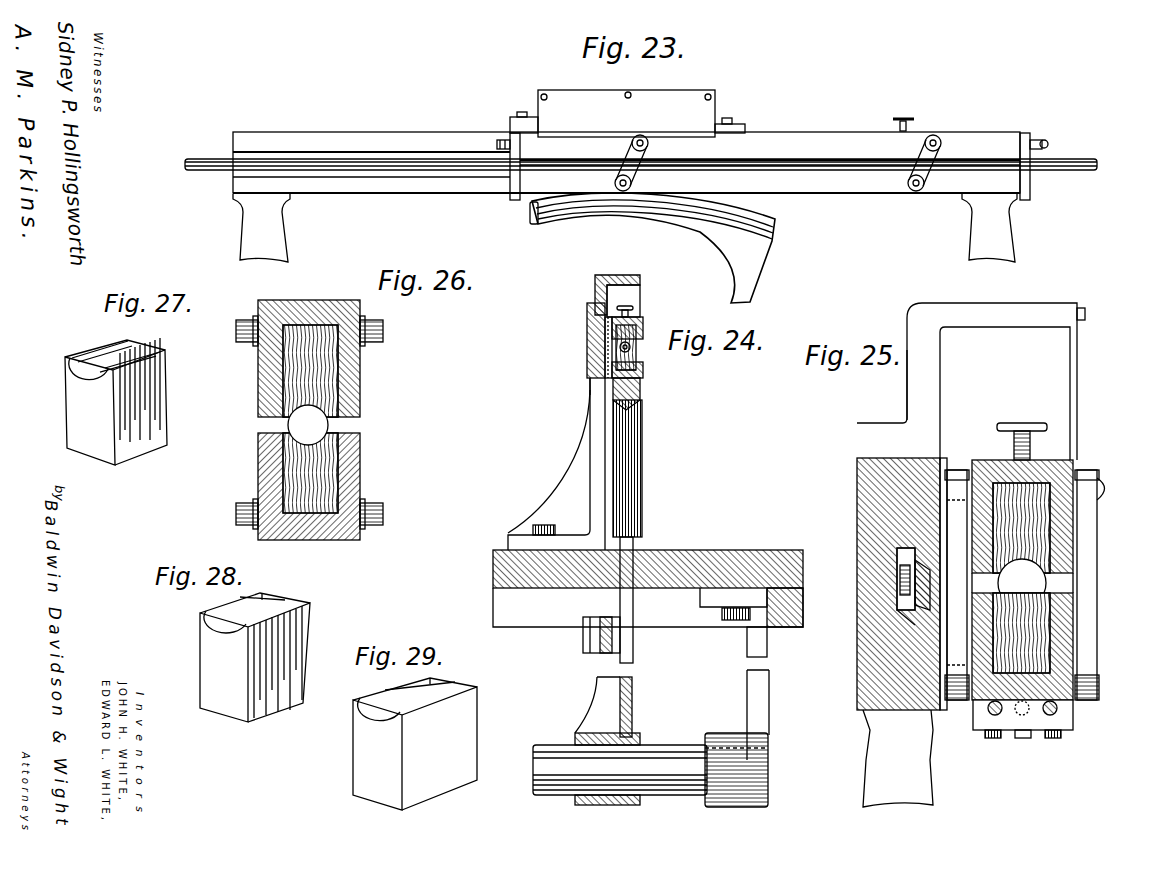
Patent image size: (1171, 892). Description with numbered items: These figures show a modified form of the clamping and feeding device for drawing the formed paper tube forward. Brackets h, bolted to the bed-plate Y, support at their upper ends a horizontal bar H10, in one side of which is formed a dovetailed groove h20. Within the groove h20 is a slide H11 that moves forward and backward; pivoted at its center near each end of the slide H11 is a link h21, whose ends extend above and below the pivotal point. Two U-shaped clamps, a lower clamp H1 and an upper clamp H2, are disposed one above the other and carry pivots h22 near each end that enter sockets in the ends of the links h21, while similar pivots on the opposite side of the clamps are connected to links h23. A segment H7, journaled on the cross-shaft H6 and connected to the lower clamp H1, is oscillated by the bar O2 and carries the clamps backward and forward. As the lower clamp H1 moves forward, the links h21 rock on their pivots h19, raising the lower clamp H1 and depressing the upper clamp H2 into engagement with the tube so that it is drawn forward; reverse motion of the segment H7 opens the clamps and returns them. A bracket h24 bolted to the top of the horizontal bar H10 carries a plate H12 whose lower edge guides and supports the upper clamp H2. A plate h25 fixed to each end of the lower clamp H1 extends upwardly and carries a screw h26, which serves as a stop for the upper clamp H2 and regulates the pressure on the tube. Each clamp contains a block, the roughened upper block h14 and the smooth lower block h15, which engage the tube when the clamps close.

In FIG. 23, the brackets h is at (625, 228).
In FIG. 24, the brackets h is at (556, 464).
In FIG. 25, the brackets h is at (898, 758).
In FIG. 23, the lower clamp H1 is at (770, 175).
In FIG. 24, the lower clamp H1 is at (641, 385).
In FIG. 25, the lower clamp H1 is at (1073, 702).
In FIG. 26, the lower clamp H1 is at (358, 473).
In FIG. 23, the upper clamp H2 is at (770, 148).
In FIG. 24, the upper clamp H2 is at (644, 318).
In FIG. 25, the upper clamp H2 is at (1075, 465).
In FIG. 26, the upper clamp H2 is at (358, 378).
In FIG. 24, the cross-shaft H6 is at (678, 735).
In FIG. 23, the segment H7 is at (652, 248).
In FIG. 24, the segment H7 is at (638, 531).
In FIG. 23, the horizontal bar H10 is at (988, 127).
In FIG. 24, the horizontal bar H10 is at (589, 341).
In FIG. 25, the horizontal bar H10 is at (868, 501).
In FIG. 24, the slide H11 is at (586, 359).
In FIG. 25, the slide H11 is at (897, 625).
In FIG. 23, the plate H12 is at (627, 113).
In FIG. 24, the plate H12 is at (641, 300).
In FIG. 25, the plate H12 is at (1070, 377).
In FIG. 24, the upper block h14 is at (645, 333).
In FIG. 25, the upper block h14 is at (1021, 528).
In FIG. 26, the upper block h14 is at (310, 371).
In FIG. 27, the upper block h14 is at (100, 328).
In FIG. 28, the upper block h14 is at (255, 657).
In FIG. 29, the upper block h14 is at (415, 744).
In FIG. 24, the lower block h15 is at (645, 372).
In FIG. 25, the lower block h15 is at (1021, 633).
In FIG. 26, the lower block h15 is at (310, 473).
In FIG. 25, the pivots h19 is at (898, 581).
In FIG. 23, the dovetailed groove h20 is at (340, 160).
In FIG. 25, the dovetailed groove h20 is at (895, 556).
In FIG. 24, the links h21 is at (590, 381).
In FIG. 25, the links h21 is at (956, 584).
In FIG. 23, the pivots h22 is at (649, 142).
In FIG. 25, the pivots h22 is at (948, 470).
In FIG. 26, the pivots h22 is at (244, 322).
In FIG. 23, the links h23 is at (640, 170).
In FIG. 24, the links h23 is at (643, 355).
In FIG. 25, the links h23 is at (1048, 583).
In FIG. 24, the bracket h24 is at (606, 295).
In FIG. 25, the bracket h24 is at (920, 385).
In FIG. 23, the plate h25 is at (508, 182).
In FIG. 23, the screw h26 is at (498, 140).
In FIG. 24, the bed-plate Y is at (700, 560).
In FIG. 24, the bar O2 is at (596, 648).